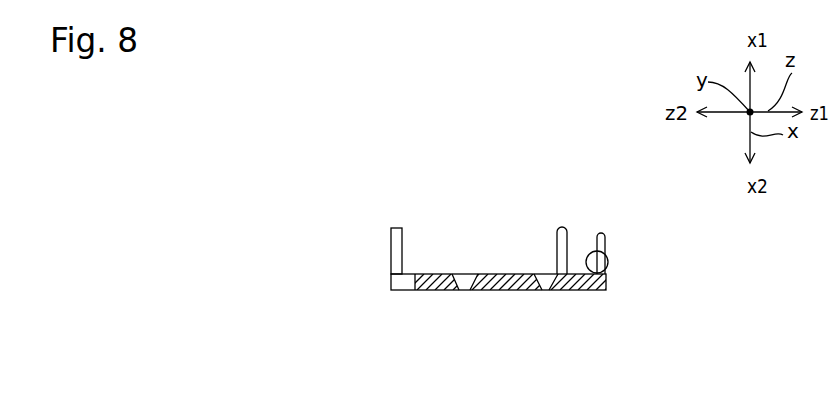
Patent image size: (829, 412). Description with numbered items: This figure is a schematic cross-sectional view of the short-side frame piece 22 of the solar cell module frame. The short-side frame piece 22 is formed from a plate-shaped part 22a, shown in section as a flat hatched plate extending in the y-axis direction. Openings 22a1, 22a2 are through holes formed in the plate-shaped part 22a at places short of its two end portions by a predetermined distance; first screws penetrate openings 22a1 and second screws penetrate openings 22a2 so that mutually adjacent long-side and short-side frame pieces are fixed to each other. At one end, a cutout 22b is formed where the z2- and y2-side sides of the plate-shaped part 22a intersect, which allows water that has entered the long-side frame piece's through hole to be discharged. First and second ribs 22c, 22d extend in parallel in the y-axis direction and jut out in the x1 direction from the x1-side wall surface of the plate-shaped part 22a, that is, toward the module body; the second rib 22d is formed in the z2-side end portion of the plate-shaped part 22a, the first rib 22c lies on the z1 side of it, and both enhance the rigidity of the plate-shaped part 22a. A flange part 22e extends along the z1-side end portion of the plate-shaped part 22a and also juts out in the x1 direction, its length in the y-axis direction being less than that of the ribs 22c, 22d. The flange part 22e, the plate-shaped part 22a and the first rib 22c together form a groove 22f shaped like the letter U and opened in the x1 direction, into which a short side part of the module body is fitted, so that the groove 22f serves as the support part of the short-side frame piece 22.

The short-side frame piece 22 is at (579, 161).
The plate-shaped part 22a is at (500, 265).
The opening 22a1 is at (528, 283).
The opening 22a2 is at (461, 284).
The cutout 22b is at (414, 281).
The first rib 22c is at (562, 227).
The second rib 22d is at (394, 227).
The flange part 22e is at (601, 234).
The groove 22f is at (606, 268).